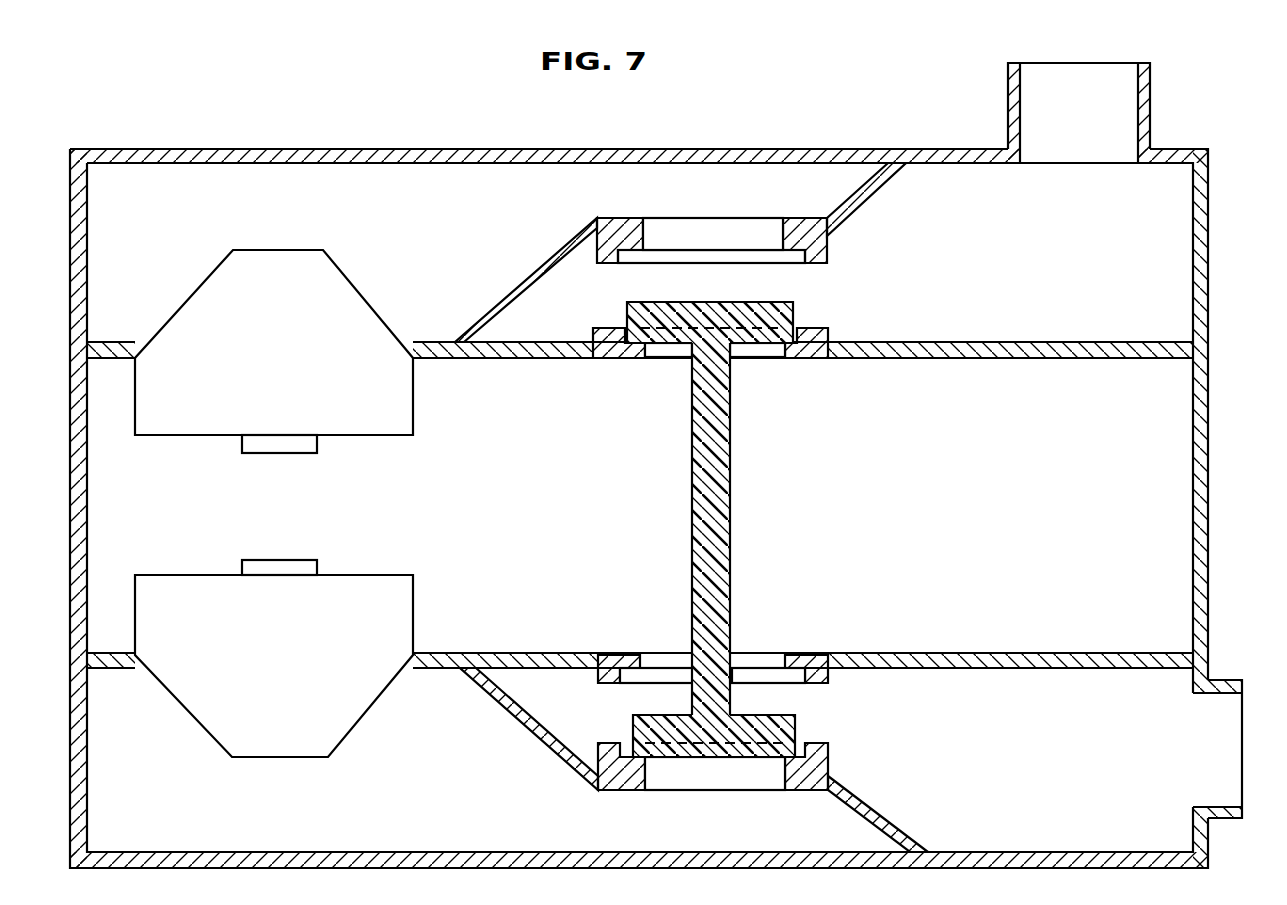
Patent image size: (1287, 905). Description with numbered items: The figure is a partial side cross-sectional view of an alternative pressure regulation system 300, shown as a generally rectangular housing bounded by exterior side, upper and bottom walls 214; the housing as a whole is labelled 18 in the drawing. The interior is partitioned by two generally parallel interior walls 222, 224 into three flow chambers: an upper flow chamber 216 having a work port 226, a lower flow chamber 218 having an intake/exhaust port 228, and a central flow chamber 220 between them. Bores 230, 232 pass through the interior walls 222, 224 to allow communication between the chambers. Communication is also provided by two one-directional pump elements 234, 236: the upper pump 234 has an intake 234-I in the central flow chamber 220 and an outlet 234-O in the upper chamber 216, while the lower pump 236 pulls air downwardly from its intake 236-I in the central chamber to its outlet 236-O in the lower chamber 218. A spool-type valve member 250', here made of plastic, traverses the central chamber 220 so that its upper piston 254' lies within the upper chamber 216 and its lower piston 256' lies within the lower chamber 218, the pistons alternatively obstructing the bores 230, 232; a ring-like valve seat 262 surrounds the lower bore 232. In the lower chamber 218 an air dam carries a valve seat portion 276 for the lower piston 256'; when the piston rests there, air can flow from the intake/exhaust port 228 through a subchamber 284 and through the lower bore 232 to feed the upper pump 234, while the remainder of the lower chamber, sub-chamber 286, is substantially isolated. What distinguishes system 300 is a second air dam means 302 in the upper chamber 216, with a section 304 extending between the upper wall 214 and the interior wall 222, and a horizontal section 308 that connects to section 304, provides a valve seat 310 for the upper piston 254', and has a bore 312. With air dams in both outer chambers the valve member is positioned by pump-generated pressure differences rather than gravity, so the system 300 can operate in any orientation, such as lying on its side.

The housing 18 is at (1005, 852).
The exterior walls 214 is at (748, 149).
The upper flow chamber 216 is at (622, 163).
The lower flow chamber 218 is at (372, 852).
The central flow chamber 220 is at (944, 506).
The upper interior wall 222 is at (1100, 360).
The lower interior wall 224 is at (995, 653).
The work port 226 is at (1150, 112).
The intake/exhaust port 228 is at (1233, 818).
The bore 230 is at (663, 358).
The bore 232 is at (660, 653).
The pump element 234 is at (287, 389).
The outlet 234-O is at (270, 250).
The intake 234-I is at (305, 453).
The pump element 236 is at (278, 662).
The intake 236-I is at (303, 560).
The outlet 236-O is at (282, 757).
The valve member 250' is at (761, 529).
The upper piston 254' is at (749, 315).
The lower piston 256' is at (714, 775).
The valve seat 262 is at (842, 620).
The valve seat portion 276 is at (828, 745).
The subchamber 284 is at (993, 742).
The sub-chamber 286 is at (456, 778).
The pressure regulation system 300 is at (382, 136).
The air dam means 302 is at (828, 250).
The section 304 is at (542, 264).
The horizontal section 308 is at (622, 218).
The valve seat 310 is at (610, 255).
The bore 312 is at (785, 218).